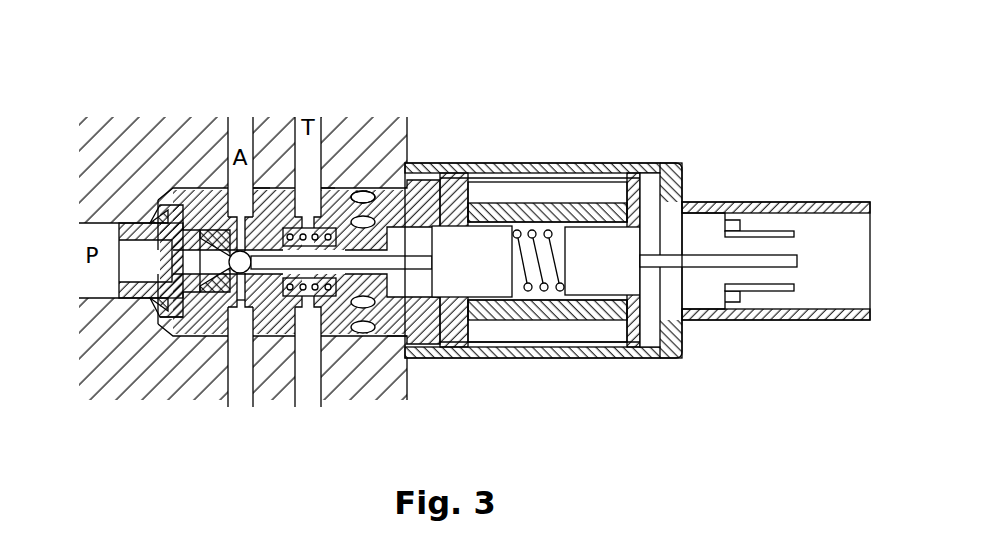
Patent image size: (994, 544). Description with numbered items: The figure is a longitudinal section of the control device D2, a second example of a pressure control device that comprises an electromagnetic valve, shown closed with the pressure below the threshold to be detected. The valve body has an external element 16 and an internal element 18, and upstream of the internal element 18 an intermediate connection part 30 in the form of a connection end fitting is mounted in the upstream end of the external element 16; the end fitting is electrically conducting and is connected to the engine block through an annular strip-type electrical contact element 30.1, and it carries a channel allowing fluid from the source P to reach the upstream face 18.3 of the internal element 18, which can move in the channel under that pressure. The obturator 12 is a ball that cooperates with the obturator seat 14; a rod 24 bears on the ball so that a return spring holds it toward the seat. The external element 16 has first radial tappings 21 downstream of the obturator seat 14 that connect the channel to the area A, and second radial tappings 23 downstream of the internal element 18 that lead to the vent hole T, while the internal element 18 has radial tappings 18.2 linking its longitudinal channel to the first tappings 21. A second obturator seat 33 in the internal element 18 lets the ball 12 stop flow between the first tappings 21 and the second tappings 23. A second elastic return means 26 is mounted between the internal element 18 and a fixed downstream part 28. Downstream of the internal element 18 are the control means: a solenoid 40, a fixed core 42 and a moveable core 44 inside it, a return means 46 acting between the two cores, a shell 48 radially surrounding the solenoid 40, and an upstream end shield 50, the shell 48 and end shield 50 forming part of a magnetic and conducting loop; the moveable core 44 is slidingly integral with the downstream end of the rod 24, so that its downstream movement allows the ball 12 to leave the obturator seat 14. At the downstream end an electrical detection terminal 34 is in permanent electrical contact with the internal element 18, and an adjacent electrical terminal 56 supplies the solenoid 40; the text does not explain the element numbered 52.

The obturator 12 is at (215, 212).
The obturator seat 14 is at (236, 273).
The external element 16 is at (208, 320).
The internal element 18 is at (197, 190).
The radial tappings 18.2 is at (242, 320).
The upstream face 18.3 is at (173, 313).
The first radial tappings 21 is at (262, 192).
The second radial tappings 23 is at (323, 198).
The rod 24 is at (410, 263).
The second elastic return means 26 is at (361, 190).
The fixed downstream part 28 is at (398, 323).
The intermediate connection part 30 is at (118, 300).
The annular electrical contact element 30.1 is at (157, 203).
The second obturator seat 33 is at (290, 290).
The electrical detection terminal 34 is at (692, 260).
The solenoid 40 is at (526, 210).
The fixed core 42 is at (592, 265).
The moveable core 44 is at (488, 280).
The return means 46 is at (549, 232).
The shell 48 is at (558, 347).
The upstream end shield 50 is at (447, 200).
The end plate 52 is at (640, 190).
The electrical terminal 56 is at (773, 237).
The control device D2 is at (129, 100).